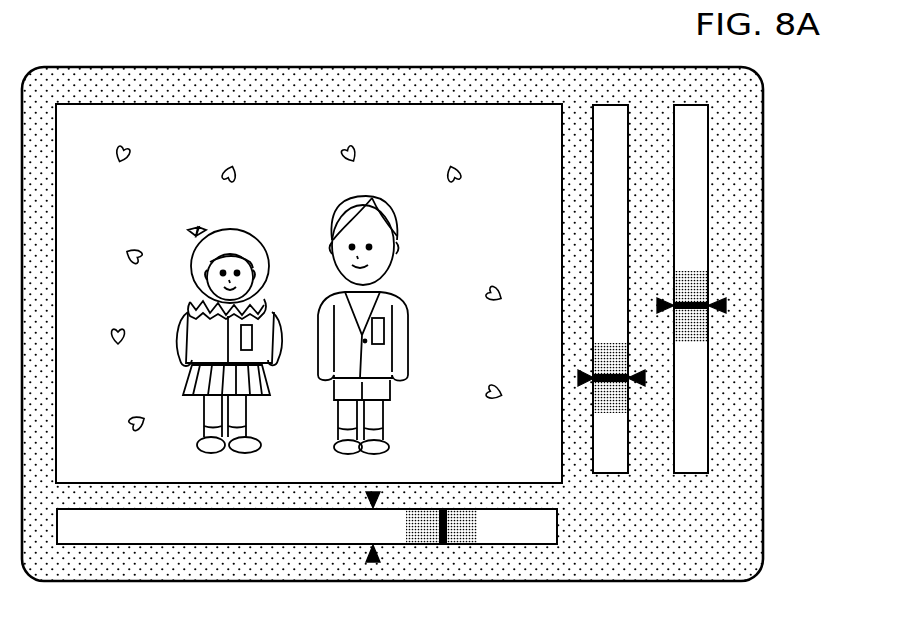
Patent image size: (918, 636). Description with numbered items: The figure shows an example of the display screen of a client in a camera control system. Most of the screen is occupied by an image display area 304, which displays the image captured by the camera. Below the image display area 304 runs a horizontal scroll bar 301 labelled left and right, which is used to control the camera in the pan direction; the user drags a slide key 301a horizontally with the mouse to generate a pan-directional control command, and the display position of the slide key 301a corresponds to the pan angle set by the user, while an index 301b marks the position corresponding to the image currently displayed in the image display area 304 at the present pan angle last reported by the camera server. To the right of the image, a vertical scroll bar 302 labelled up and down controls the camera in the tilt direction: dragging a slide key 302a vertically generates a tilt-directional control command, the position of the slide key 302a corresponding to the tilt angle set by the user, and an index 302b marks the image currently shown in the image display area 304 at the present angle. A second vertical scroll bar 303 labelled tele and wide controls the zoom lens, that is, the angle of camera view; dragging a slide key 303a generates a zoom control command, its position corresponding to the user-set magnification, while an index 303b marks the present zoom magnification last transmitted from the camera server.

The scroll bar 301 is at (324, 557).
The slide key 301a is at (442, 545).
The index 301b is at (373, 563).
The scroll bar 302 is at (707, 264).
The slide key 302a is at (623, 392).
The index 302b is at (647, 378).
The scroll bar 303 is at (747, 289).
The slide key 303a is at (692, 314).
The index 303b is at (727, 305).
The image display area 304 is at (300, 104).